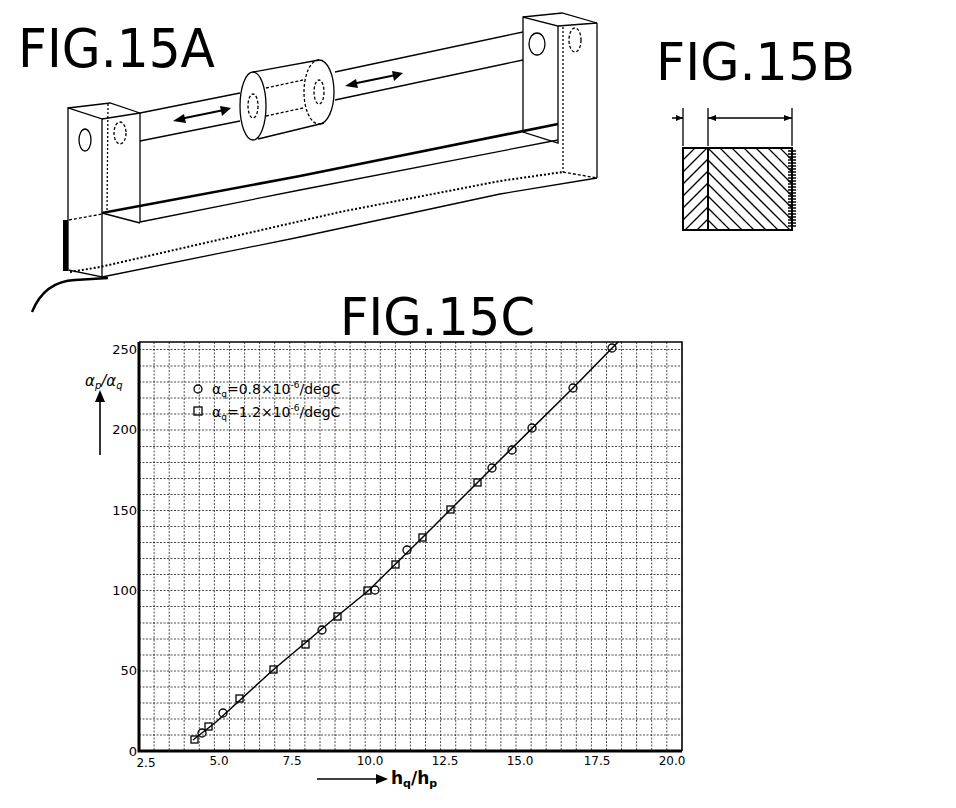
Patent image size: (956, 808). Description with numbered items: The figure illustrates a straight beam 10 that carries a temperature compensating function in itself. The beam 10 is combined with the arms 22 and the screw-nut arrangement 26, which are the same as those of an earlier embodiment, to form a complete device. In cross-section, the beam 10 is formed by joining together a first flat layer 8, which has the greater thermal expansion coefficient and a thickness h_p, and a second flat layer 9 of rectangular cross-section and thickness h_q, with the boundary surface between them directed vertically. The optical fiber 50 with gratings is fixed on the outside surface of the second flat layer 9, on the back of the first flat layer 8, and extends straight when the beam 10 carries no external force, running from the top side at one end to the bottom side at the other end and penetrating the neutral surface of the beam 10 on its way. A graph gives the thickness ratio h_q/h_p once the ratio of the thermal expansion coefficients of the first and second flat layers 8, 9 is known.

In FIG. 15A, the arms 22 is at (67, 173).
In FIG. 15A, the screw-nut arrangement 26 is at (358, 70).
In FIG. 15A, the straight beam 10 is at (312, 206).
In FIG. 15B, the straight beam 10 is at (750, 183).
In FIG. 15A, the second flat layer 9 is at (100, 242).
In FIG. 15B, the second flat layer 9 is at (742, 230).
In FIG. 15A, the first flat layer 8 is at (63, 250).
In FIG. 15B, the first flat layer 8 is at (690, 183).
In FIG. 15A, the optical fiber 50 is at (413, 182).
In FIG. 15B, the optical fiber 50 is at (793, 190).